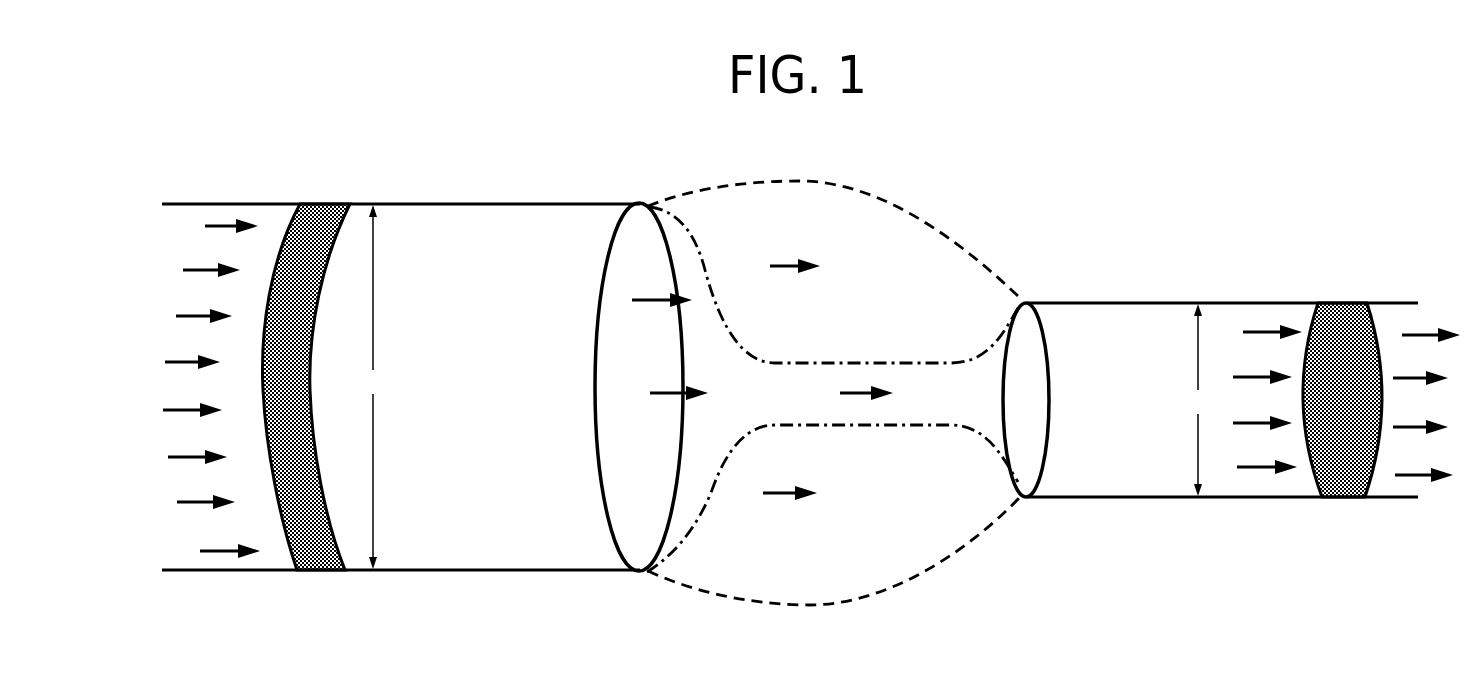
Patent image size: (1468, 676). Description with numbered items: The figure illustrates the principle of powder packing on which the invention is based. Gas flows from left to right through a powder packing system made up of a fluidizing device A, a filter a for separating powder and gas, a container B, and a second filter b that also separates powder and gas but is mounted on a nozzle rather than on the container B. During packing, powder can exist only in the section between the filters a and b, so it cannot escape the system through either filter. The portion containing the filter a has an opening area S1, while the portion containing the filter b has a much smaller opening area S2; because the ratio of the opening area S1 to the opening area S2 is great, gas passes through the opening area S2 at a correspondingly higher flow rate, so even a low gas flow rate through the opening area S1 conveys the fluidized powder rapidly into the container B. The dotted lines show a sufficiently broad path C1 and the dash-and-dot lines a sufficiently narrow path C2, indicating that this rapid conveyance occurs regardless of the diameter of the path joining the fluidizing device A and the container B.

The fluidizing device A is at (435, 371).
The filter a is at (306, 370).
The container B is at (1210, 384).
The filter b is at (1342, 385).
The sufficiently broad path C1 is at (835, 290).
The sufficiently narrow path C2 is at (834, 515).
The opening area S1 is at (371, 387).
The opening area S2 is at (1198, 400).